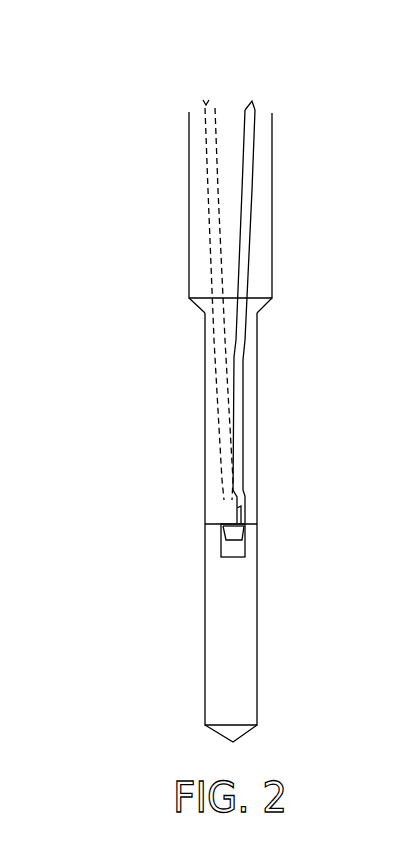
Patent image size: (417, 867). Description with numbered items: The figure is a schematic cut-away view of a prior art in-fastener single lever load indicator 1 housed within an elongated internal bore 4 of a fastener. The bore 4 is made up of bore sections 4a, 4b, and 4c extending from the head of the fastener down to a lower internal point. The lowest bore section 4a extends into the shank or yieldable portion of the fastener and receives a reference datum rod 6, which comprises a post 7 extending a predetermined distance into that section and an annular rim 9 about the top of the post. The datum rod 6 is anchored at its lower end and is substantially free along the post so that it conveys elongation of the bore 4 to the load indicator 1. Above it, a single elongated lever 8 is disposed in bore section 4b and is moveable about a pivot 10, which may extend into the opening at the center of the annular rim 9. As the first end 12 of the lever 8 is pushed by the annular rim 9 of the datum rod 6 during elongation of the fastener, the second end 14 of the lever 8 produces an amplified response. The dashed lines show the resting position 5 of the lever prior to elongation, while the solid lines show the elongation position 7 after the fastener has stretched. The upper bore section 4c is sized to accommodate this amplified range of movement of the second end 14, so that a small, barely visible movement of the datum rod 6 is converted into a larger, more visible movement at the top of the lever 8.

The in-fastener single lever load indicator 1 is at (228, 376).
The elongated internal bore 4 is at (214, 427).
The bore section 4a is at (227, 633).
The bore section 4b is at (217, 390).
The bore section 4c is at (189, 224).
The resting position 5 is at (206, 104).
The reference datum rod 6 is at (248, 605).
The elongation position 7 is at (294, 375).
The single elongated lever 8 is at (247, 250).
The annular rim 9 is at (217, 542).
The pivot 10 is at (247, 530).
The first end 12 is at (237, 512).
The second end 14 is at (248, 138).